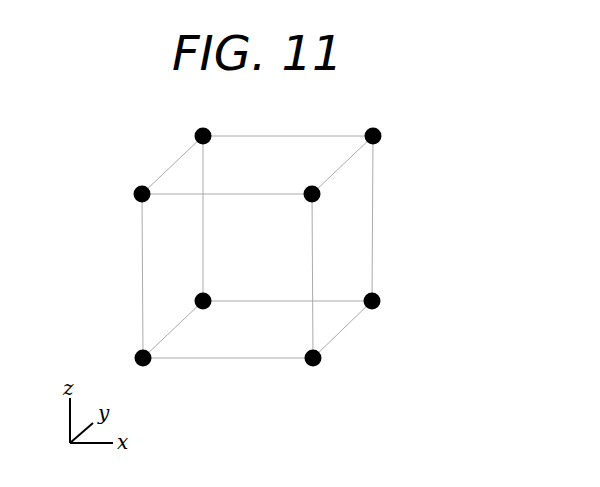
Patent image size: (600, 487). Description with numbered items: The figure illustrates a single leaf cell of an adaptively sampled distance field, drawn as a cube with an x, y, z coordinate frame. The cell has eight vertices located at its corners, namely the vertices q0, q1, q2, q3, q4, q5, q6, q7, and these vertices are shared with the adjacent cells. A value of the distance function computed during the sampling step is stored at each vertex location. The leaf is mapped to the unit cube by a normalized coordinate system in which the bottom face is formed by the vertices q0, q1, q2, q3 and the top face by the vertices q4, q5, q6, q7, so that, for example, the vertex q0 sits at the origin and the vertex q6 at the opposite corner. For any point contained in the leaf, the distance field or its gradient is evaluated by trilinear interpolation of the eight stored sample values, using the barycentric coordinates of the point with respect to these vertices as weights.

The vertex q0 is at (153, 373).
The vertex q1 is at (322, 373).
The vertex q2 is at (382, 316).
The vertex q3 is at (213, 316).
The vertex q4 is at (152, 209).
The vertex q5 is at (322, 209).
The vertex q6 is at (383, 151).
The vertex q7 is at (213, 151).